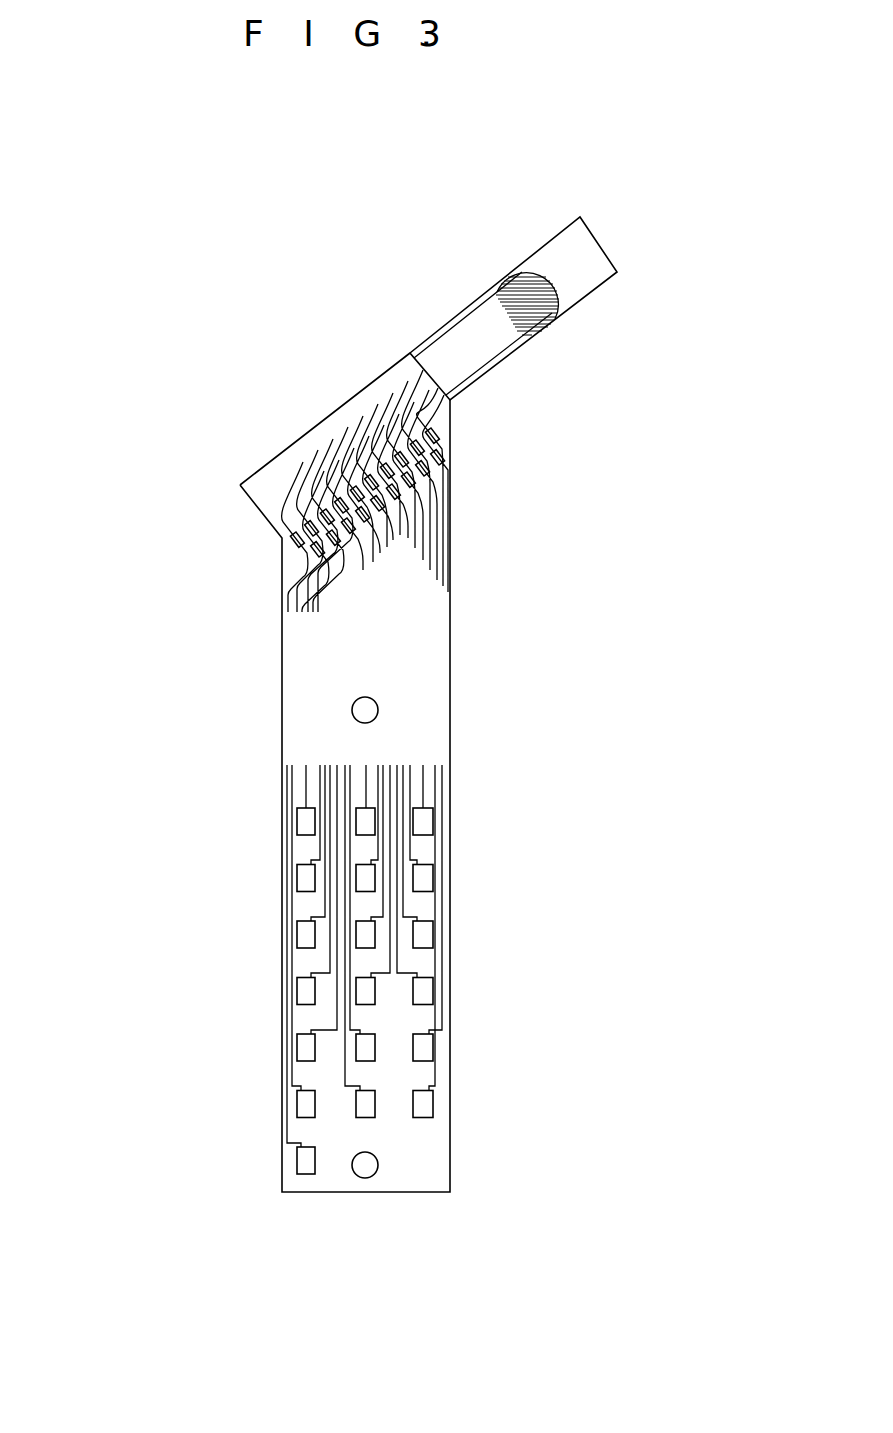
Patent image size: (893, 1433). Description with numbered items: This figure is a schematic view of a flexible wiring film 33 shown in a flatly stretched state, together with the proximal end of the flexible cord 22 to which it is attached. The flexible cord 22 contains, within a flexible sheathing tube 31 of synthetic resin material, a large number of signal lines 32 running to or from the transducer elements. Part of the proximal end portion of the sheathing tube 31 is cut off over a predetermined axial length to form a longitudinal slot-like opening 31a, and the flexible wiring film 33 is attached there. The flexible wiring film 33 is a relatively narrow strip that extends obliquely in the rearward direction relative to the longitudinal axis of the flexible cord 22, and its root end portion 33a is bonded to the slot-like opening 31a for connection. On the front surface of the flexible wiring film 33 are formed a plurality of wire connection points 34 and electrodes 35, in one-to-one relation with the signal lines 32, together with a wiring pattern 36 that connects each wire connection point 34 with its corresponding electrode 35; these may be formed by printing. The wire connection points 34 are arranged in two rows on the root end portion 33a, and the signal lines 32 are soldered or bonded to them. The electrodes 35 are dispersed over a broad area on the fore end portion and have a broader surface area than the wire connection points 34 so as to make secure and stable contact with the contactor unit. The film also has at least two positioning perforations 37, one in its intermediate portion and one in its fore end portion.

The flexible cord 22 is at (483, 255).
The sheathing tube 31 is at (572, 252).
The slot-like opening 31a is at (483, 318).
The signal lines 32 is at (533, 332).
The flexible wiring film 33 is at (451, 682).
The root end portion 33a is at (365, 405).
The wire connection points 34 is at (310, 533).
The electrodes 35 is at (303, 815).
The wiring pattern 36 is at (308, 602).
The positioning perforation 37 is at (353, 706).